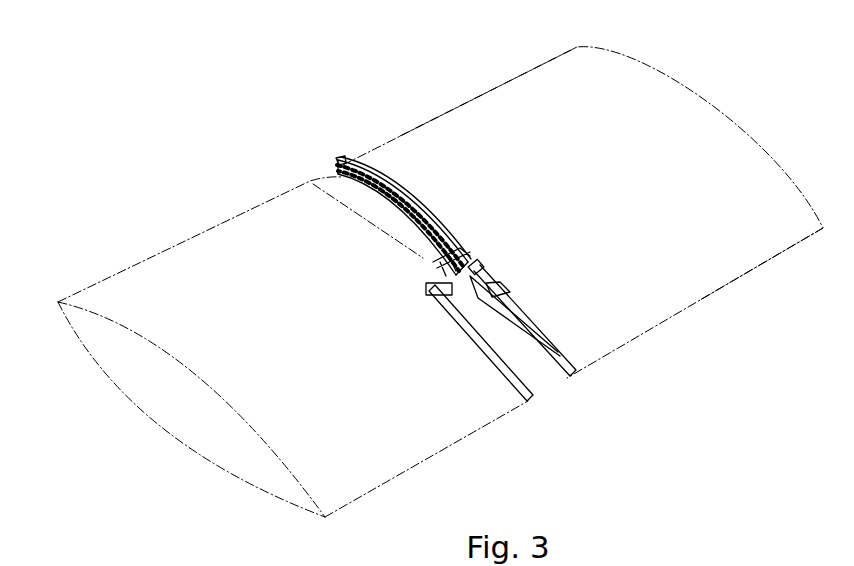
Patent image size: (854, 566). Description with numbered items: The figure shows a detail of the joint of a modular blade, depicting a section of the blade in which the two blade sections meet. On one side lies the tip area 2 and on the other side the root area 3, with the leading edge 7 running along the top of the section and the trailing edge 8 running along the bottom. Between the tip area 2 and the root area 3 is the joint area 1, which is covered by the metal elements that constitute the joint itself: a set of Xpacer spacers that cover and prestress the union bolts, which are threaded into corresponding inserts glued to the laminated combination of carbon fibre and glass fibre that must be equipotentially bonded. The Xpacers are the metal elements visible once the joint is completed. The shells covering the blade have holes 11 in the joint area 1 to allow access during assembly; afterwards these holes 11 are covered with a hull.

The joint area 1 is at (343, 190).
The tip area 2 is at (220, 349).
The root area 3 is at (672, 120).
The leading edge 7 is at (490, 106).
The trailing edge 8 is at (663, 305).
The holes 11 is at (535, 375).